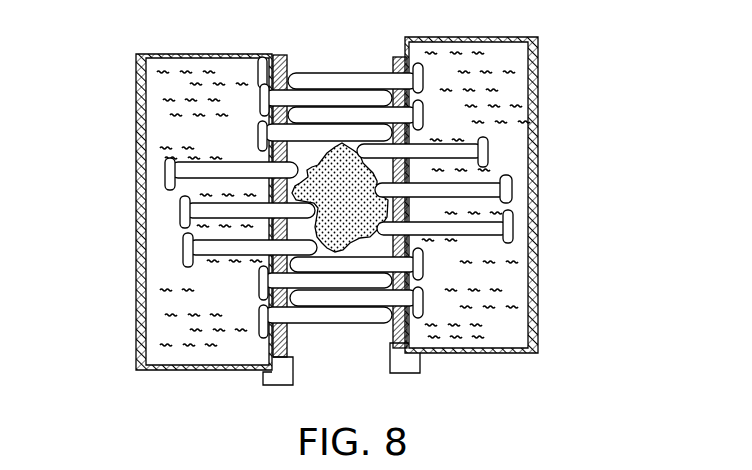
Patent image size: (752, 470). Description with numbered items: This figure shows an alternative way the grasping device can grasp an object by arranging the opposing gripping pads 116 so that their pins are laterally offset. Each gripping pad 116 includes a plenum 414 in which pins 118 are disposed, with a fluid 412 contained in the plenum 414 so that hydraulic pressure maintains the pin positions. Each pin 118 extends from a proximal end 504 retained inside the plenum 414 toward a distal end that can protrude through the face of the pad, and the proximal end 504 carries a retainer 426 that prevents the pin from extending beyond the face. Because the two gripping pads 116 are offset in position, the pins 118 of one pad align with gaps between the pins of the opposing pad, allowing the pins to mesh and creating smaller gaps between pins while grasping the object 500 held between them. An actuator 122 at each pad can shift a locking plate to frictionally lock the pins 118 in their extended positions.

The gripping pad 116 is at (140, 310).
The pin 118 is at (353, 100).
The actuator 122 is at (262, 389).
The fluid 412 is at (262, 358).
The plenum 414 is at (158, 80).
The retainer 426 is at (258, 80).
The central mass 500 is at (358, 201).
The proximal end 504 is at (160, 164).